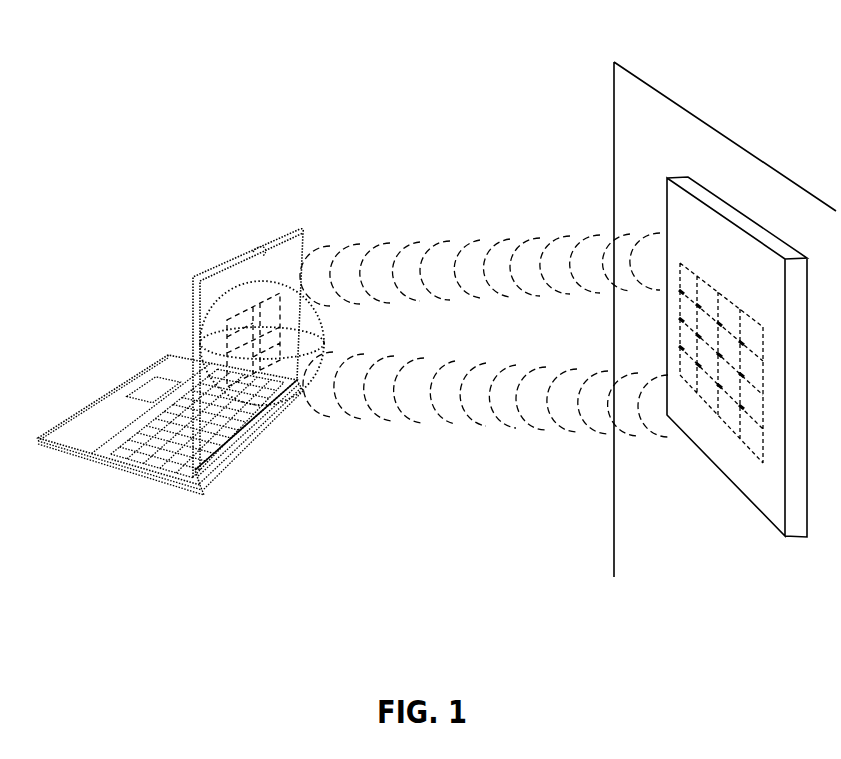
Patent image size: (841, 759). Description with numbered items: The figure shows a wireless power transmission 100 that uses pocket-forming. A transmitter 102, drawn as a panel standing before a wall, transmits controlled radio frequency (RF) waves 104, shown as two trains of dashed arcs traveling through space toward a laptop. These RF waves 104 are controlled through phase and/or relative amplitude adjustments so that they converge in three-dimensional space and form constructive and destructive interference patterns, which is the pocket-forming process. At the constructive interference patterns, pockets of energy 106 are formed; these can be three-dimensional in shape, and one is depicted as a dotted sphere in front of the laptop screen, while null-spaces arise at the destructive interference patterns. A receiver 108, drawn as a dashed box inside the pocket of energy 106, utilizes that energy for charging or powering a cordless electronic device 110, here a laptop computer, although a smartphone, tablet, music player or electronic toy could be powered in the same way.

The wireless power transmission 100 is at (110, 133).
The transmitter 102 is at (687, 210).
The RF waves 104 is at (443, 270).
The pockets of energy 106 is at (250, 280).
The receiver 108 is at (240, 372).
The cordless electronic device 110 is at (93, 422).